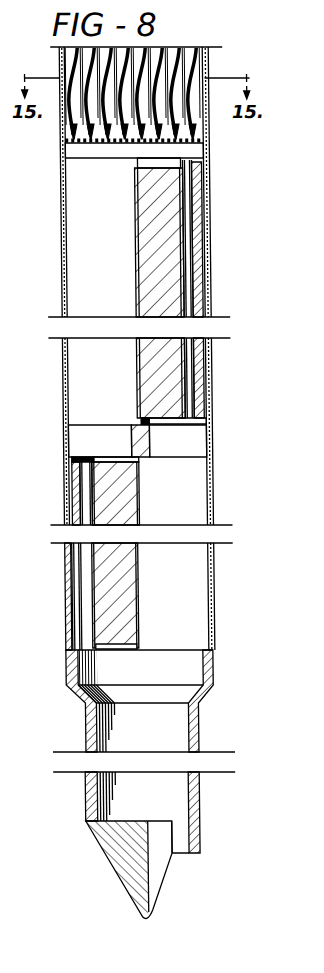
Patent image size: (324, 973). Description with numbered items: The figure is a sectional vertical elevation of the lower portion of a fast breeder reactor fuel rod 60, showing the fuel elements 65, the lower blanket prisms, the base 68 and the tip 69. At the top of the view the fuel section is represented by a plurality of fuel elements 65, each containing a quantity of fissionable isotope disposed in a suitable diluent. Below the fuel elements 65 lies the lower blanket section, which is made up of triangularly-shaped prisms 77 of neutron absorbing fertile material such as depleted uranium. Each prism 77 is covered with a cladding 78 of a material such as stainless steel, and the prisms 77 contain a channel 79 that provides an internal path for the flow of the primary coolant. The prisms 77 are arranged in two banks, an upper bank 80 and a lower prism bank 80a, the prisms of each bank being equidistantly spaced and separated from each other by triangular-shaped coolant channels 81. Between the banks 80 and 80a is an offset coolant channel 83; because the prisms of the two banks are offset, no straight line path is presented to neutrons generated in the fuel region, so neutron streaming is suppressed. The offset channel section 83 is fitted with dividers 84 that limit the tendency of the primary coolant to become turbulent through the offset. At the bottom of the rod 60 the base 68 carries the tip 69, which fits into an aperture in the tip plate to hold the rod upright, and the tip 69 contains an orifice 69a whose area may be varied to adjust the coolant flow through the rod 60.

The fuel rod 60 is at (218, 229).
The fuel elements 65 is at (195, 66).
The base 68 is at (195, 723).
The tip 69 is at (130, 911).
The orifice 69a is at (178, 852).
The triangular prisms 77 is at (155, 264).
The cladding 78 is at (207, 288).
The channel 79 is at (190, 388).
The upper bank 80 is at (84, 380).
The lower prism bank 80a is at (203, 602).
The coolant channels 81 is at (83, 230).
The offset coolant channel 83 is at (197, 438).
The dividers 84 is at (133, 435).